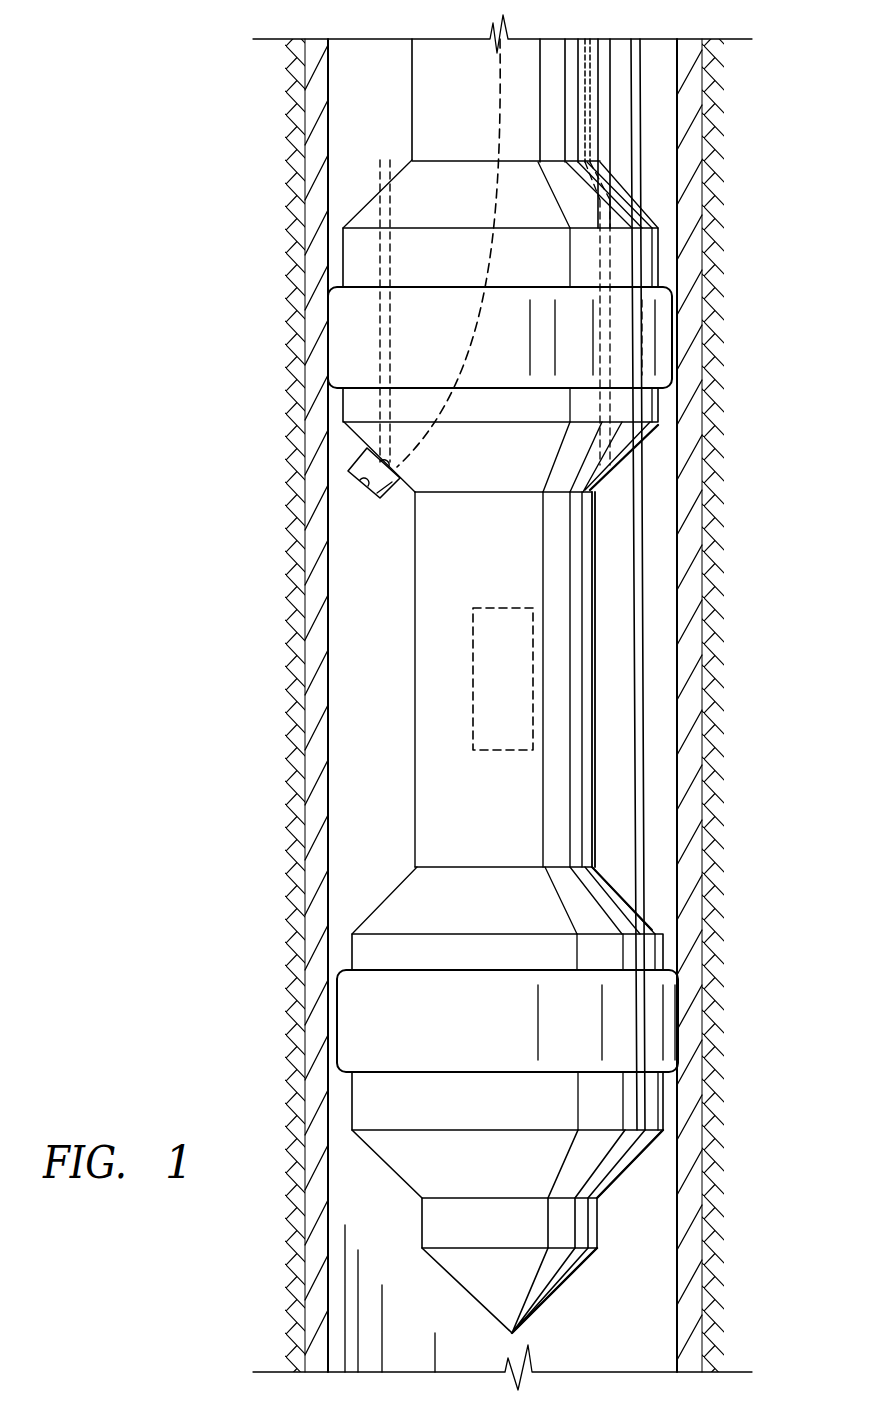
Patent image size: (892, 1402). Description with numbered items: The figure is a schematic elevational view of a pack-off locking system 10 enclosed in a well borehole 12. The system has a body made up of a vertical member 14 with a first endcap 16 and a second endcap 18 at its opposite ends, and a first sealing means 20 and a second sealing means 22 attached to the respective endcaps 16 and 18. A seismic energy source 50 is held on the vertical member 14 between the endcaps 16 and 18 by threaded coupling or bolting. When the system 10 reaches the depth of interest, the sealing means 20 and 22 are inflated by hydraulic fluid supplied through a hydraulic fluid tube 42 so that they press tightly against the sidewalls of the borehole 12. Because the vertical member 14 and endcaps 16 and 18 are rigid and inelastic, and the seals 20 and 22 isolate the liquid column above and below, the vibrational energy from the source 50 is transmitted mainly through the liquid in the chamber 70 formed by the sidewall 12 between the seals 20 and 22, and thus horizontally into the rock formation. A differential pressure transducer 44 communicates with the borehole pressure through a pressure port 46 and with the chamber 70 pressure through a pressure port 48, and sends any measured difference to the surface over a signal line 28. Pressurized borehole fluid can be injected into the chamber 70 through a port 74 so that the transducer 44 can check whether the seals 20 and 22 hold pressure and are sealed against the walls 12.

The pack-off locking system 10 is at (607, 575).
The well borehole 12 is at (678, 808).
The vertical member 14 is at (592, 725).
The first endcap 16 is at (660, 272).
The second endcap 18 is at (640, 1107).
The first sealing means 20 is at (662, 340).
The second sealing means 22 is at (653, 1015).
The signal line 28 is at (471, 346).
The hydraulic fluid tube 42 is at (637, 130).
The differential pressure transducer 44 is at (392, 485).
The pressure port 46 is at (382, 188).
The pressure port 48 is at (365, 483).
The seismic energy source 50 is at (500, 606).
The chamber 70 is at (360, 715).
The port 74 is at (605, 472).